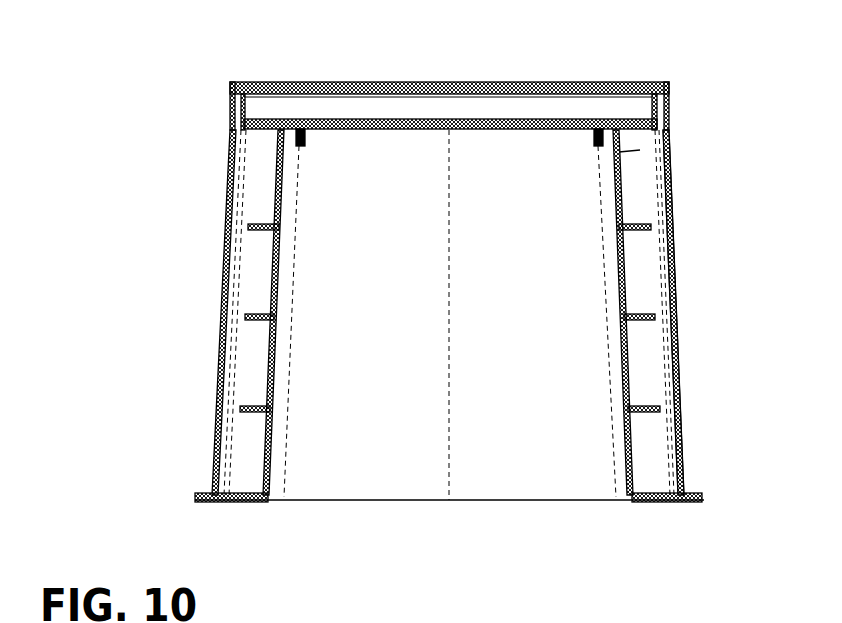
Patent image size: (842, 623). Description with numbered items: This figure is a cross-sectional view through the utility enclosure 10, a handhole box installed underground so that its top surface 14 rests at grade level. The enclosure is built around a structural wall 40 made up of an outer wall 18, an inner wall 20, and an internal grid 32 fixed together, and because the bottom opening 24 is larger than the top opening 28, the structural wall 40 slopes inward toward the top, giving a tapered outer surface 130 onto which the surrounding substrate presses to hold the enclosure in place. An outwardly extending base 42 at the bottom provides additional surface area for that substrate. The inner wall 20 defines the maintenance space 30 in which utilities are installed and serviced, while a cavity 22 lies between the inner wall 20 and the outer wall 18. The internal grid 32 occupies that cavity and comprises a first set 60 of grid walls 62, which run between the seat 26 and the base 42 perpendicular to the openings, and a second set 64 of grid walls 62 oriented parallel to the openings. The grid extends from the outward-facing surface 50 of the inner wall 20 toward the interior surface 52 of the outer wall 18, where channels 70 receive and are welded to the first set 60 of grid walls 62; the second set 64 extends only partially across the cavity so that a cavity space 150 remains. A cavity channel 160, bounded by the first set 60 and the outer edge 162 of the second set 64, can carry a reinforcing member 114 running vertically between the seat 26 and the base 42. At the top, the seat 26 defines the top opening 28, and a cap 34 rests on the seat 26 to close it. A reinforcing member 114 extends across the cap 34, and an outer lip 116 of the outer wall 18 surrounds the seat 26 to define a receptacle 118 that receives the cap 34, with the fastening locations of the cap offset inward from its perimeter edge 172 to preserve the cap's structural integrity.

The utility enclosure 10 is at (104, 128).
The top surface 14 is at (372, 82).
The outer wall 18 is at (676, 327).
The inner wall 20 is at (283, 220).
The cavity 22 is at (251, 384).
The bottom opening 24 is at (632, 498).
The seat 26 is at (254, 119).
The top opening 28 is at (275, 130).
The maintenance space 30 is at (369, 436).
The internal grid 32 is at (254, 307).
The cap 34 is at (519, 77).
The structural wall 40 is at (206, 256).
The base 42 is at (702, 499).
The outward-facing surface 50 is at (640, 150).
The interior surface 52 is at (672, 235).
The first set of grid walls 60 is at (649, 440).
The grid walls 62 is at (642, 375).
The second set of grid walls 64 is at (246, 421).
The channels 70 is at (679, 400).
The reinforcing member 114 is at (403, 98).
The outer lip 116 is at (230, 92).
The receptacle 118 is at (237, 72).
The outer surface 130 is at (221, 355).
The cavity space 150 is at (640, 292).
The cavity channel 160 is at (666, 179).
The outer edge 162 is at (642, 226).
The perimeter edge 172 is at (662, 80).